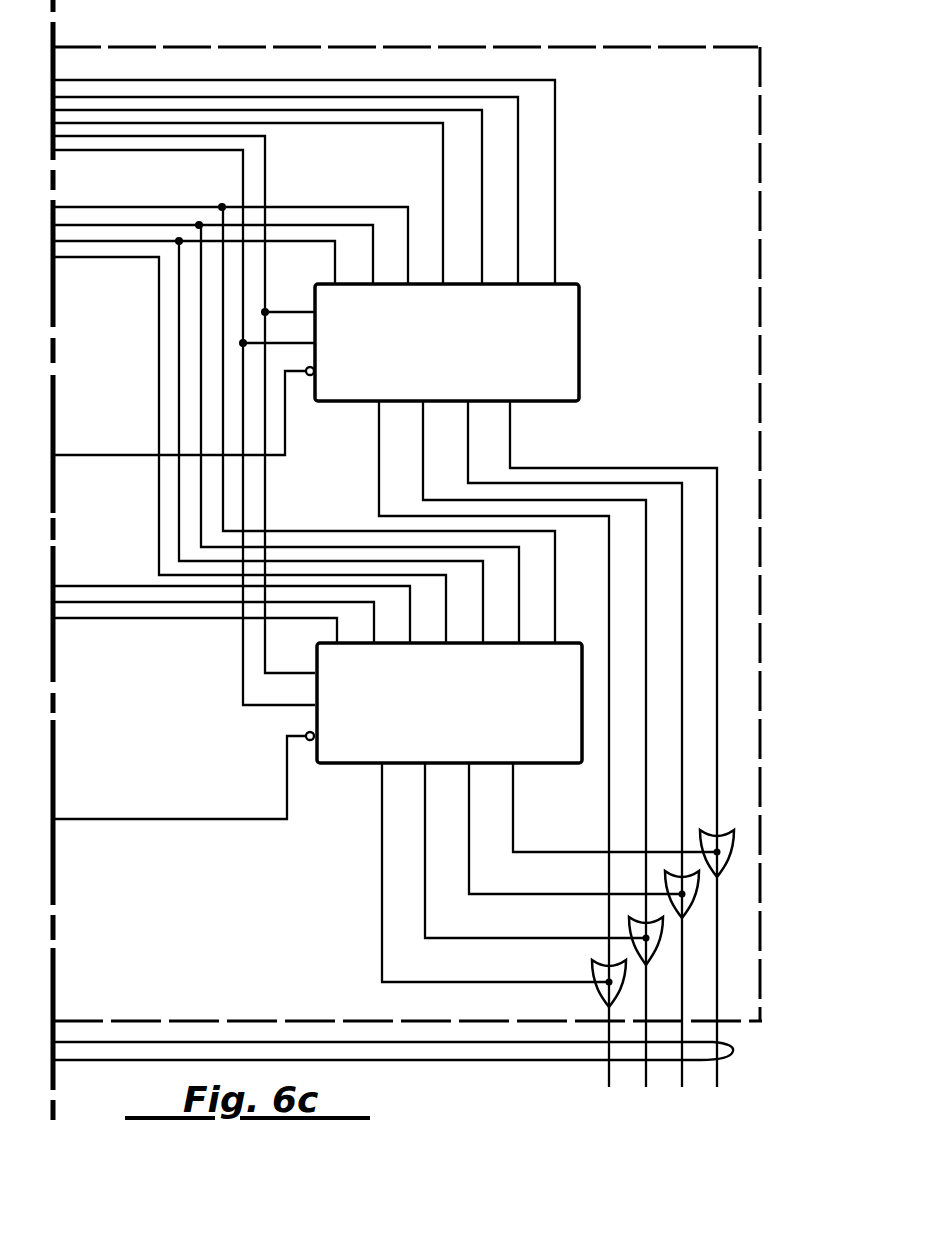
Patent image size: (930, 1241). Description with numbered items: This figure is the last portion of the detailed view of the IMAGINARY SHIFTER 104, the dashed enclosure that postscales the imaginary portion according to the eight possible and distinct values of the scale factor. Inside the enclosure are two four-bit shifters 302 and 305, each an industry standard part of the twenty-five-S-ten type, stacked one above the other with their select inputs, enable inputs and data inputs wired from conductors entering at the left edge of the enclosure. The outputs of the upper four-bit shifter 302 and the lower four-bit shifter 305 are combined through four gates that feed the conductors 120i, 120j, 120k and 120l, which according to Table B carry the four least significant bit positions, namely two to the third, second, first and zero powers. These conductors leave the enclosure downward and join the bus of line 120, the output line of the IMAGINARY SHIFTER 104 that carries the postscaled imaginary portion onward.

The IMAGINARY SHIFTER 104 is at (693, 47).
The 4-BIT SHIFTER 302 is at (579, 331).
The 4-BIT SHIFTER 305 is at (350, 765).
The conductor 120i is at (402, 982).
The conductor 120j is at (445, 938).
The conductor 120k is at (483, 894).
The conductor 120l is at (522, 852).
The line 120 is at (427, 1060).